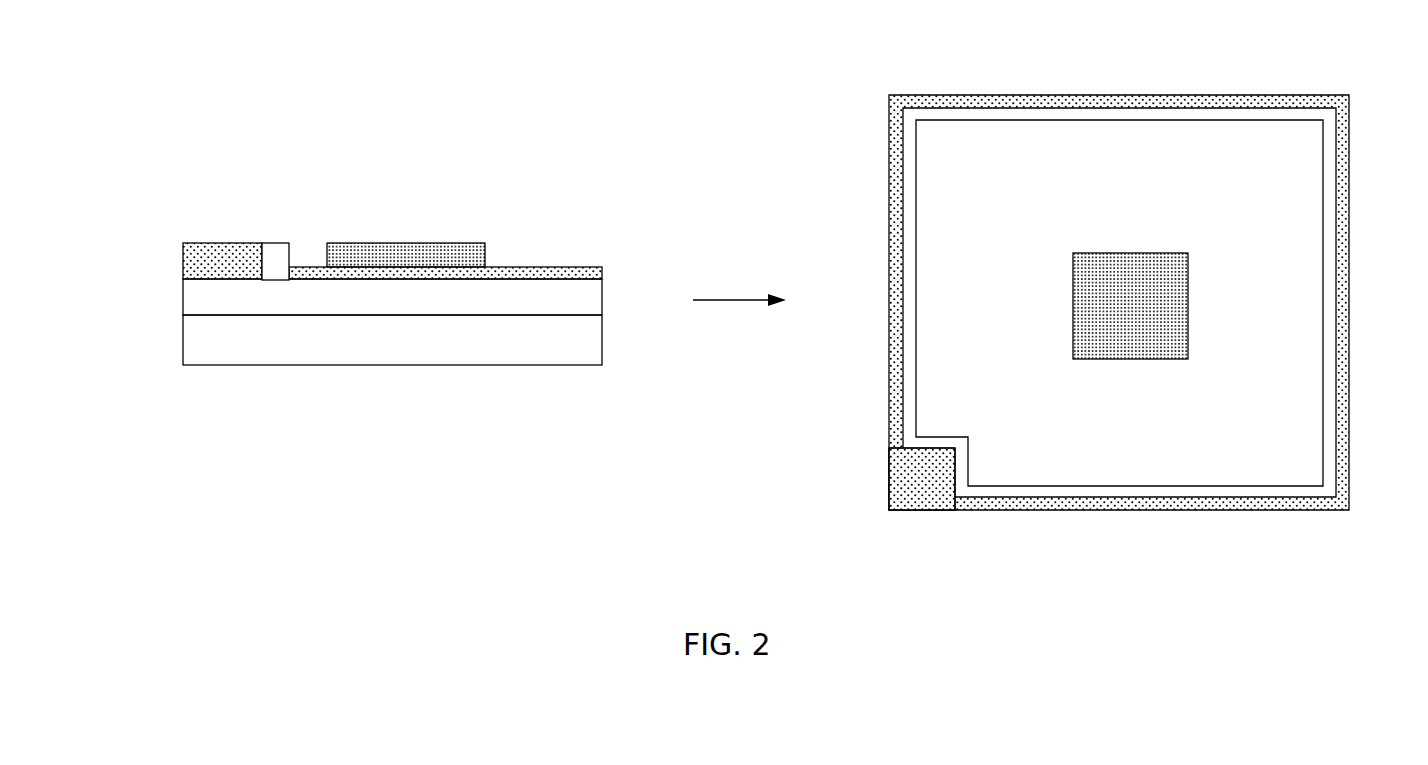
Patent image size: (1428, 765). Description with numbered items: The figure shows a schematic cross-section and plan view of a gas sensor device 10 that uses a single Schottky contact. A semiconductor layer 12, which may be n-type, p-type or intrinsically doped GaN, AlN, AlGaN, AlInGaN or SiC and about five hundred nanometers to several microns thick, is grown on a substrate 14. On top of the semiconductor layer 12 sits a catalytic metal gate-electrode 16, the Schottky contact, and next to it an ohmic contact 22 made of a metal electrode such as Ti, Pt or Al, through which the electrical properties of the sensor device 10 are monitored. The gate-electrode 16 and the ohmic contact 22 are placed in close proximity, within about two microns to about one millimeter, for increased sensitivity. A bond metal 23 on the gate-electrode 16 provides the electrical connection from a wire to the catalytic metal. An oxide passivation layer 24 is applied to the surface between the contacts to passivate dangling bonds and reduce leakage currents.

The sensor device 10 is at (168, 137).
The semiconductor layer 12 is at (203, 300).
The substrate 14 is at (210, 345).
The gate-electrode 16 is at (967, 258).
The ohmic contact 22 is at (205, 262).
The bond metal 23 is at (420, 243).
The oxide passivation layer 24 is at (276, 250).